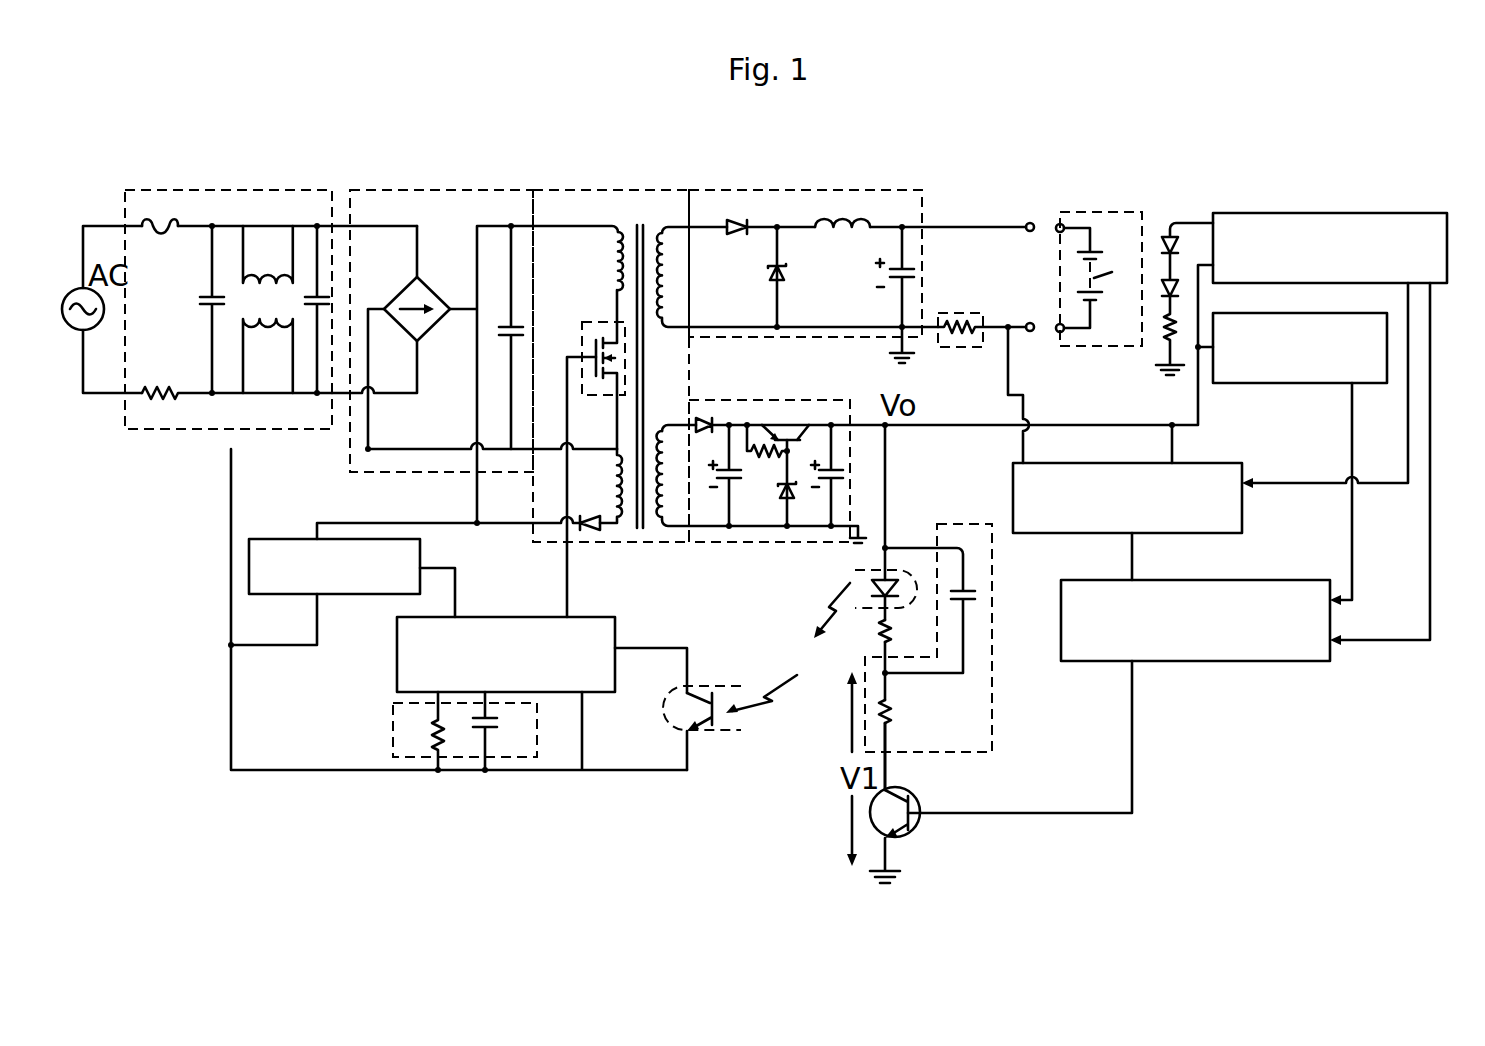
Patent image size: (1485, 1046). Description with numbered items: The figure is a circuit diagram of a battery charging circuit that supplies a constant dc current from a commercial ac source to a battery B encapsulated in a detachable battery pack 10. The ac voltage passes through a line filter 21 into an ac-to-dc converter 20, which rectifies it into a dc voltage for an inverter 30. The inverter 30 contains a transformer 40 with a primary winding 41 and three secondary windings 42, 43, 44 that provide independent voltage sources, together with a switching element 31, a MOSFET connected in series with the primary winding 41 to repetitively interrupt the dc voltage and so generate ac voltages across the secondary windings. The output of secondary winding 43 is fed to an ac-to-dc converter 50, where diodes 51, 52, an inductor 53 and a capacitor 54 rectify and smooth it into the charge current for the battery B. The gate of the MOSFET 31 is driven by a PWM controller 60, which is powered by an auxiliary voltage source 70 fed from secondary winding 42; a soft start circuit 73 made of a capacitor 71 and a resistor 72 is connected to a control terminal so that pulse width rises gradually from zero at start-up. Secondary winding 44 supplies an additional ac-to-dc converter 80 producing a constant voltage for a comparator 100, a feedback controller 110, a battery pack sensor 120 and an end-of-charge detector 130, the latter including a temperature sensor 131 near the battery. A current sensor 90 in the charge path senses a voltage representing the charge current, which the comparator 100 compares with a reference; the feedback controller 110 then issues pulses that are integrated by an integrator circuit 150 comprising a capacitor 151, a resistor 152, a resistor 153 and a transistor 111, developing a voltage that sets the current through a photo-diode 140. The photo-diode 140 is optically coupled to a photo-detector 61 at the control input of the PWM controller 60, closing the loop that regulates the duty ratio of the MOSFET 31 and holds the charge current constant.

The battery pack 10 is at (1082, 212).
The ac-to-dc converter 20 is at (417, 186).
The line filter 21 is at (237, 186).
The inverter 30 is at (617, 186).
The switching element (MOSFET) 31 is at (584, 322).
The transformer 40 is at (652, 208).
The primary winding 41 is at (612, 261).
The secondary winding 42 is at (623, 518).
The secondary winding 43 is at (670, 266).
The secondary winding 44 is at (670, 490).
The ac-to-dc converter 50 is at (861, 240).
The diode 51 is at (735, 220).
The diode 52 is at (790, 273).
The inductor 53 is at (847, 216).
The capacitor 54 is at (912, 273).
The PWM controller 60 is at (517, 617).
The photo-detector 61 is at (722, 737).
The auxiliary voltage source 70 is at (287, 538).
The capacitor 71 is at (493, 730).
The resistor 72 is at (428, 735).
The soft start circuit 73 is at (495, 760).
The additional ac-to-dc converter 80 is at (805, 400).
The current sensor 90 is at (963, 348).
The comparator 100 is at (1214, 463).
The feedback controller 110 is at (1265, 580).
The transistor 111 is at (918, 828).
The battery pack sensor 120 is at (1295, 383).
The end-of-charge detector 130 is at (1423, 213).
The temperature sensor 131 is at (1165, 228).
The photo-diode 140 is at (862, 607).
The integrator circuit 150 is at (902, 607).
The capacitor 151 is at (971, 595).
The resistor 152 is at (880, 643).
The resistor 153 is at (880, 717).